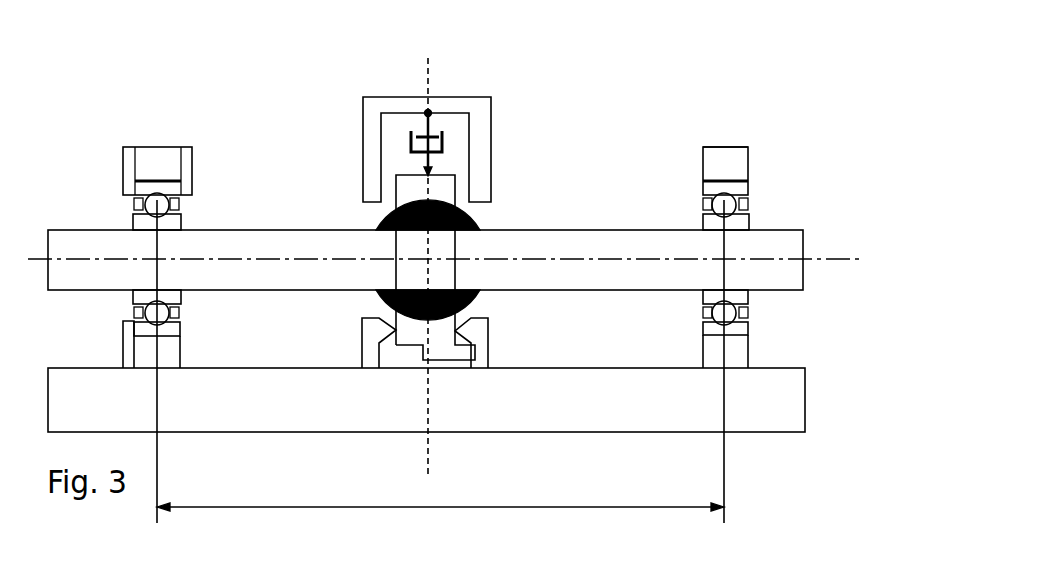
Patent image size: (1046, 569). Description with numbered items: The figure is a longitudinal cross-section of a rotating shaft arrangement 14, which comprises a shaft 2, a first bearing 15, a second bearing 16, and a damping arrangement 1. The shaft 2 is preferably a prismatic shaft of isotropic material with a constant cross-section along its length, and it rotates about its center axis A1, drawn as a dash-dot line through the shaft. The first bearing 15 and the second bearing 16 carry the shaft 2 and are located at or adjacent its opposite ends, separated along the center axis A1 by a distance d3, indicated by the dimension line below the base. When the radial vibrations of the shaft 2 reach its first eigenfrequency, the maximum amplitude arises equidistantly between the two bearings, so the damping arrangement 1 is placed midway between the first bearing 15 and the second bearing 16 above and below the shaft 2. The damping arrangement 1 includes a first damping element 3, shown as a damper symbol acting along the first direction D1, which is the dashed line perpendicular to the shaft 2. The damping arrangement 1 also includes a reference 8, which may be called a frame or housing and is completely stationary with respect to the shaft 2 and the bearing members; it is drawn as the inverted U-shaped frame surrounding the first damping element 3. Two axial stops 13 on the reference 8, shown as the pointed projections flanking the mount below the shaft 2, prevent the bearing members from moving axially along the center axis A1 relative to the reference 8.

The damping arrangement 1 is at (323, 117).
The shaft 2 is at (577, 243).
The first damping element 3 is at (440, 143).
The reference 8 is at (483, 160).
The axial stop 13 is at (372, 327).
The rotating shaft arrangement 14 is at (698, 68).
The first bearing 15 is at (201, 203).
The second bearing 16 is at (762, 200).
The first direction D1 is at (424, 73).
The center axis A1 is at (843, 257).
The distance d3 is at (440, 361).